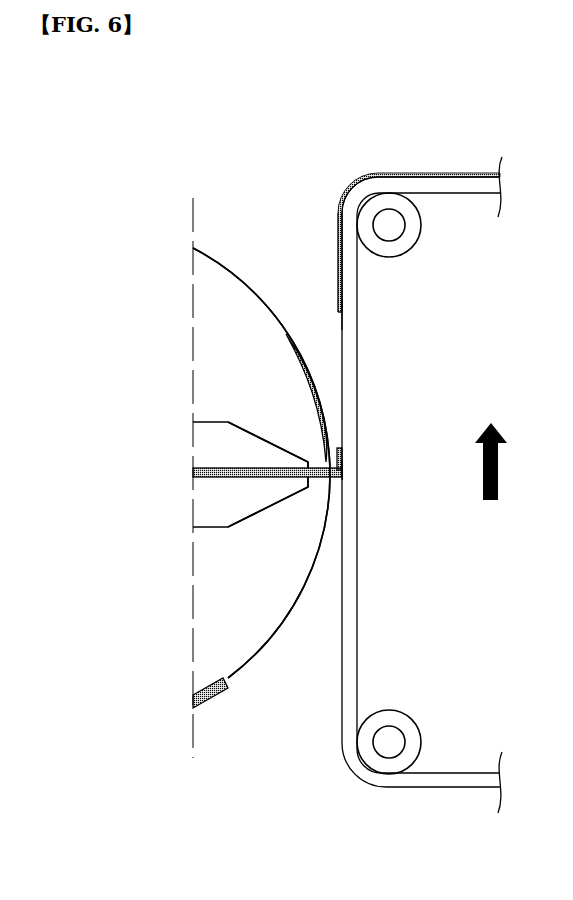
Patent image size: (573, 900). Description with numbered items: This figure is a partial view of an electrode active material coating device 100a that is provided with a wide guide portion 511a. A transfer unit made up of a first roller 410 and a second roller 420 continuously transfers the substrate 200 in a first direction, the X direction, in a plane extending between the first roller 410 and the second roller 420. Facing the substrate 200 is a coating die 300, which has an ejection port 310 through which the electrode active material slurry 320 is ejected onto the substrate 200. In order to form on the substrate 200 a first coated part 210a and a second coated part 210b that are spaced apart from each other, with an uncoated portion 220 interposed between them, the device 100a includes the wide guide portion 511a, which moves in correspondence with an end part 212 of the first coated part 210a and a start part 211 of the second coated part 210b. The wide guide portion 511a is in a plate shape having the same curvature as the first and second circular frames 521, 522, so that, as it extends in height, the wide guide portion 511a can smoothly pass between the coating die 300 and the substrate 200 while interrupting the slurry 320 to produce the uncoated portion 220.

The electrode active material coating device 100a is at (285, 110).
The substrate 200 is at (370, 563).
The first coated part 210a is at (342, 277).
The second coated part 210b is at (342, 470).
The start part of second coated part 211 is at (342, 433).
The end part of first coated part 212 is at (342, 328).
The uncoated portion 220 is at (334, 338).
The coating die 300 is at (208, 448).
The ejection port 310 is at (272, 470).
The electrode active material slurry 320 is at (213, 477).
The first roller 410 is at (412, 232).
The second roller 420 is at (398, 720).
The wide guide portion 511a is at (312, 372).
The first circular frame 521 is at (227, 268).
The second circular frame 522 is at (227, 268).